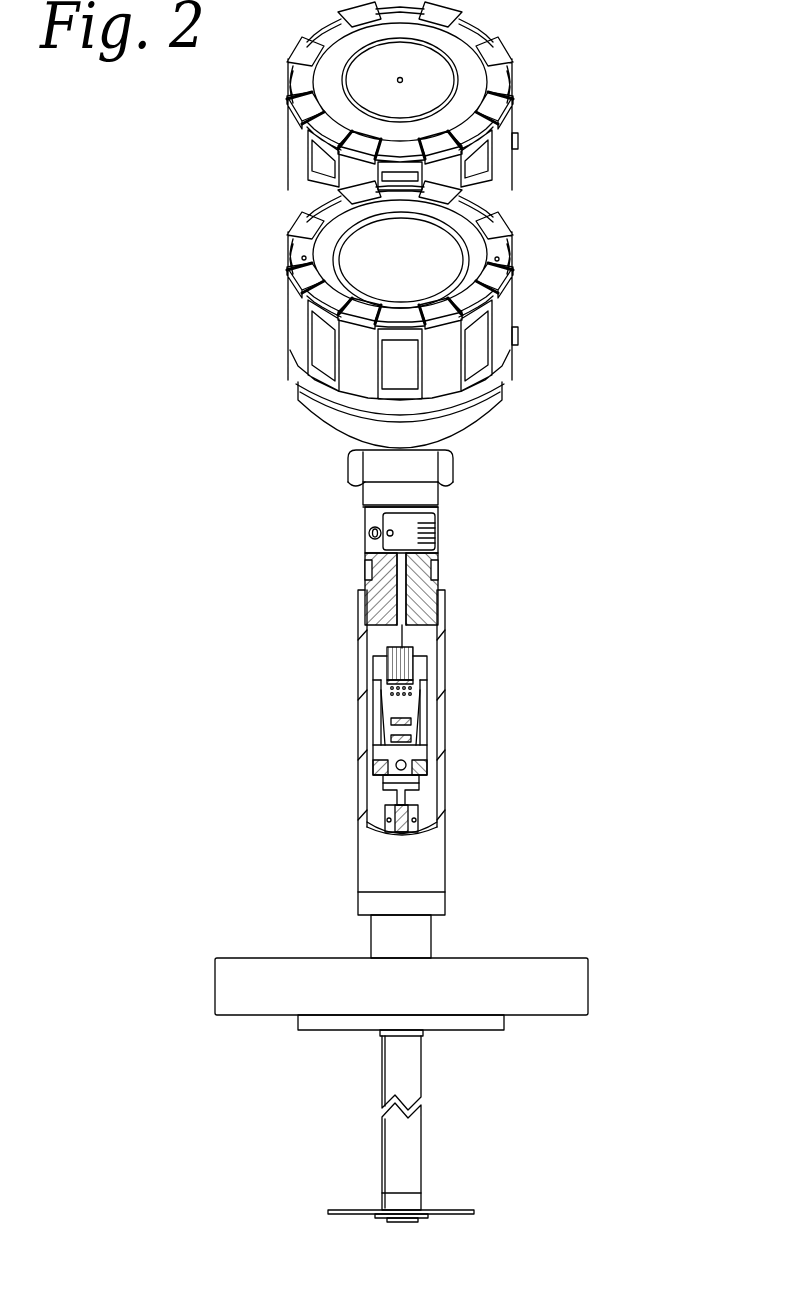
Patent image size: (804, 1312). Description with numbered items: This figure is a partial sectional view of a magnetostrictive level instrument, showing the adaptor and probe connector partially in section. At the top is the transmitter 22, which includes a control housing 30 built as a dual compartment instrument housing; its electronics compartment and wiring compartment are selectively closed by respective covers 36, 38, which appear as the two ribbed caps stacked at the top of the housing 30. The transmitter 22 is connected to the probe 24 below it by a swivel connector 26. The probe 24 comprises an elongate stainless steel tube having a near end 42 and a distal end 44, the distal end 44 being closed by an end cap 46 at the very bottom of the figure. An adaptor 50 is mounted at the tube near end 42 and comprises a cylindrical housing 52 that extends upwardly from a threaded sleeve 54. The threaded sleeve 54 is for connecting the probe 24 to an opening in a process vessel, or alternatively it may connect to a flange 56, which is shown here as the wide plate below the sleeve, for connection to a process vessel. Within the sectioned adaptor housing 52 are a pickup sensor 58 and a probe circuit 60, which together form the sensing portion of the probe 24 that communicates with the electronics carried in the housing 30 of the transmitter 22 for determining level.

The transmitter 22 is at (290, 427).
The probe 24 is at (412, 1152).
The swivel connector 26 is at (444, 532).
The control housing 30 is at (457, 225).
The cover 36 is at (499, 260).
The cover 38 is at (487, 82).
The near end 42 is at (387, 1045).
The distal end 44 is at (397, 1165).
The end cap 46 is at (407, 1221).
The adaptor 50 is at (468, 728).
The cylindrical housing 52 is at (430, 868).
The threaded sleeve 54 is at (417, 938).
The flange 56 is at (588, 988).
The pickup sensor 58 is at (415, 815).
The probe circuit 60 is at (420, 668).